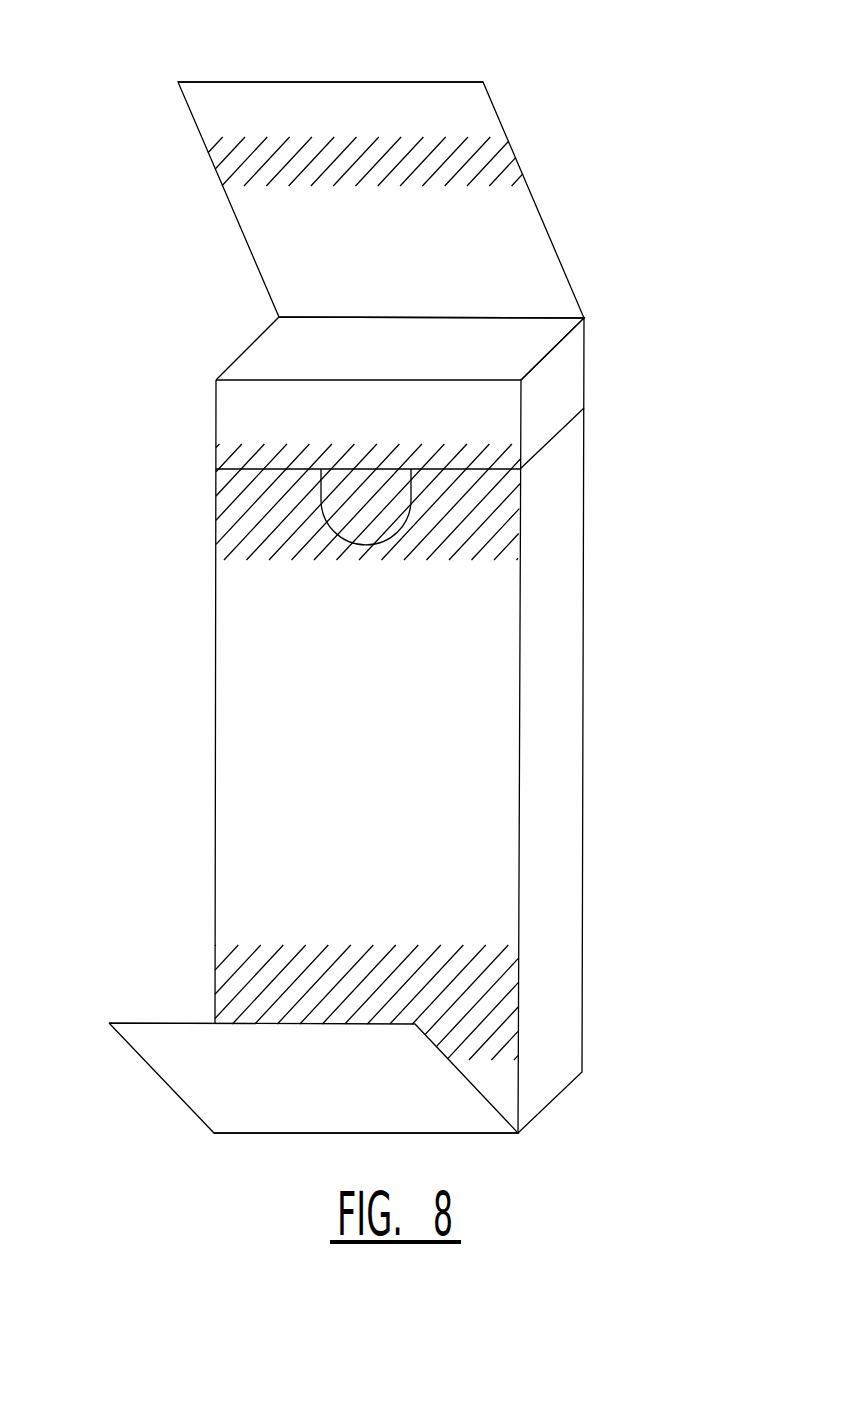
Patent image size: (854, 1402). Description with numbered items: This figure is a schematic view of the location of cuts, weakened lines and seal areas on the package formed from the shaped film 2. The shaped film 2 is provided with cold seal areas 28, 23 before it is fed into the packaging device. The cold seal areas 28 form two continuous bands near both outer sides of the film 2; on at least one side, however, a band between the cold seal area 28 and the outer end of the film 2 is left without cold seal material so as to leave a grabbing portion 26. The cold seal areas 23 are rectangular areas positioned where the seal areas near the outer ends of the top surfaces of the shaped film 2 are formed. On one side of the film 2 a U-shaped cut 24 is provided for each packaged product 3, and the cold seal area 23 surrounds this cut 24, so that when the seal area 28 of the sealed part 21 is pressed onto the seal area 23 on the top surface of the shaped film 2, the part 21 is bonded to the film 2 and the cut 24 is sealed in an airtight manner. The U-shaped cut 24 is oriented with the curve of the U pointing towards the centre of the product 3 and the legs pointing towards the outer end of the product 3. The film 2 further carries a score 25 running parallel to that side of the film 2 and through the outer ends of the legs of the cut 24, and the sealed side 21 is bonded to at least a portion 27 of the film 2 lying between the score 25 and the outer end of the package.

The shaped film 2 is at (262, 713).
The product 3 is at (498, 992).
The sealed part 21 is at (473, 99).
The cold seal area 23 is at (503, 530).
The U-shaped cut 24 is at (318, 500).
The score 25 is at (260, 468).
The grabbing portion 26 is at (440, 105).
The portion of the film 27 is at (300, 343).
The cold seal area 28 is at (238, 157).